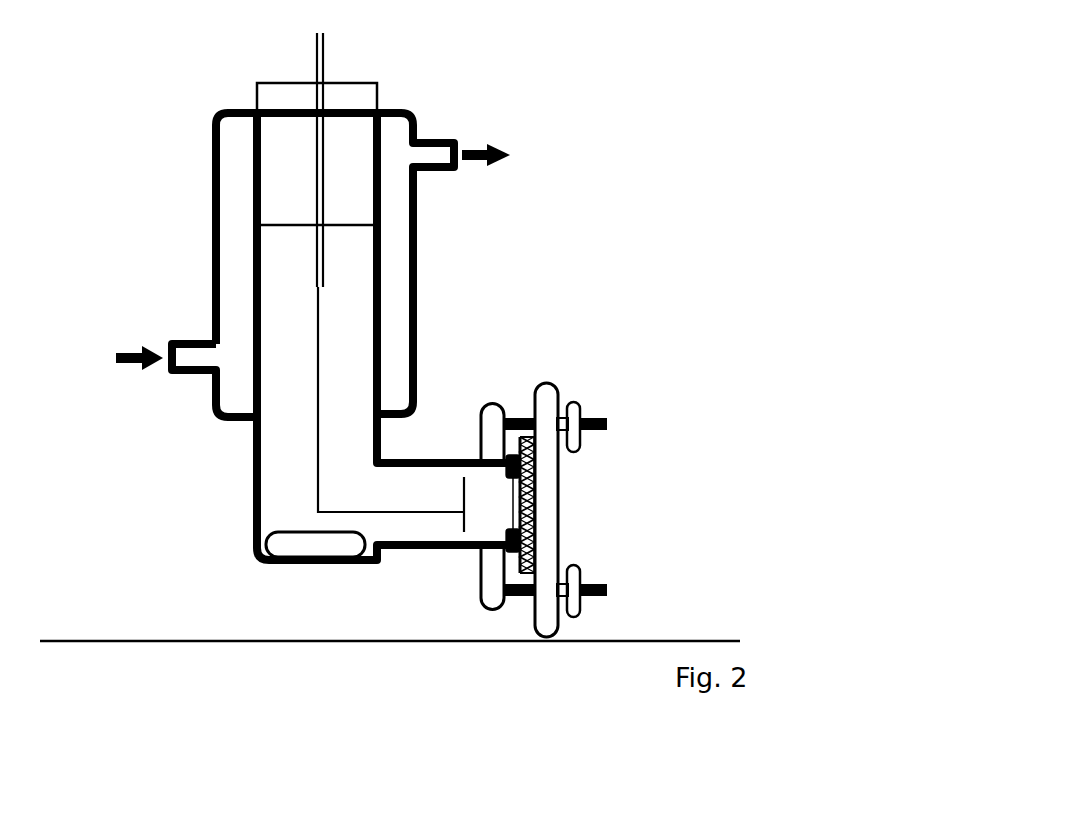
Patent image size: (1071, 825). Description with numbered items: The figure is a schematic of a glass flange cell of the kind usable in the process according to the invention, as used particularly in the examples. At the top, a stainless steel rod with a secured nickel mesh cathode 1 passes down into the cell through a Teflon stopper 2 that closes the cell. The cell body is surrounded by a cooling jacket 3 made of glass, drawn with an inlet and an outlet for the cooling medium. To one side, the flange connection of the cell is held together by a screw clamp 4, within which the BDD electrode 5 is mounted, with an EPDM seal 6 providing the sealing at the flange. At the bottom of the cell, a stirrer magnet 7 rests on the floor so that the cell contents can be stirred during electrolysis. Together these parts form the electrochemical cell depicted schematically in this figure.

The stainless steel rod with secured nickel mesh cathode 1 is at (324, 52).
The Teflon stopper 2 is at (365, 98).
The cooling jacket 3 is at (239, 247).
The screw clamp 4 is at (547, 402).
The BDD electrode 5 is at (513, 500).
The EPDM seal 6 is at (520, 544).
The stirrer magnet 7 is at (280, 547).